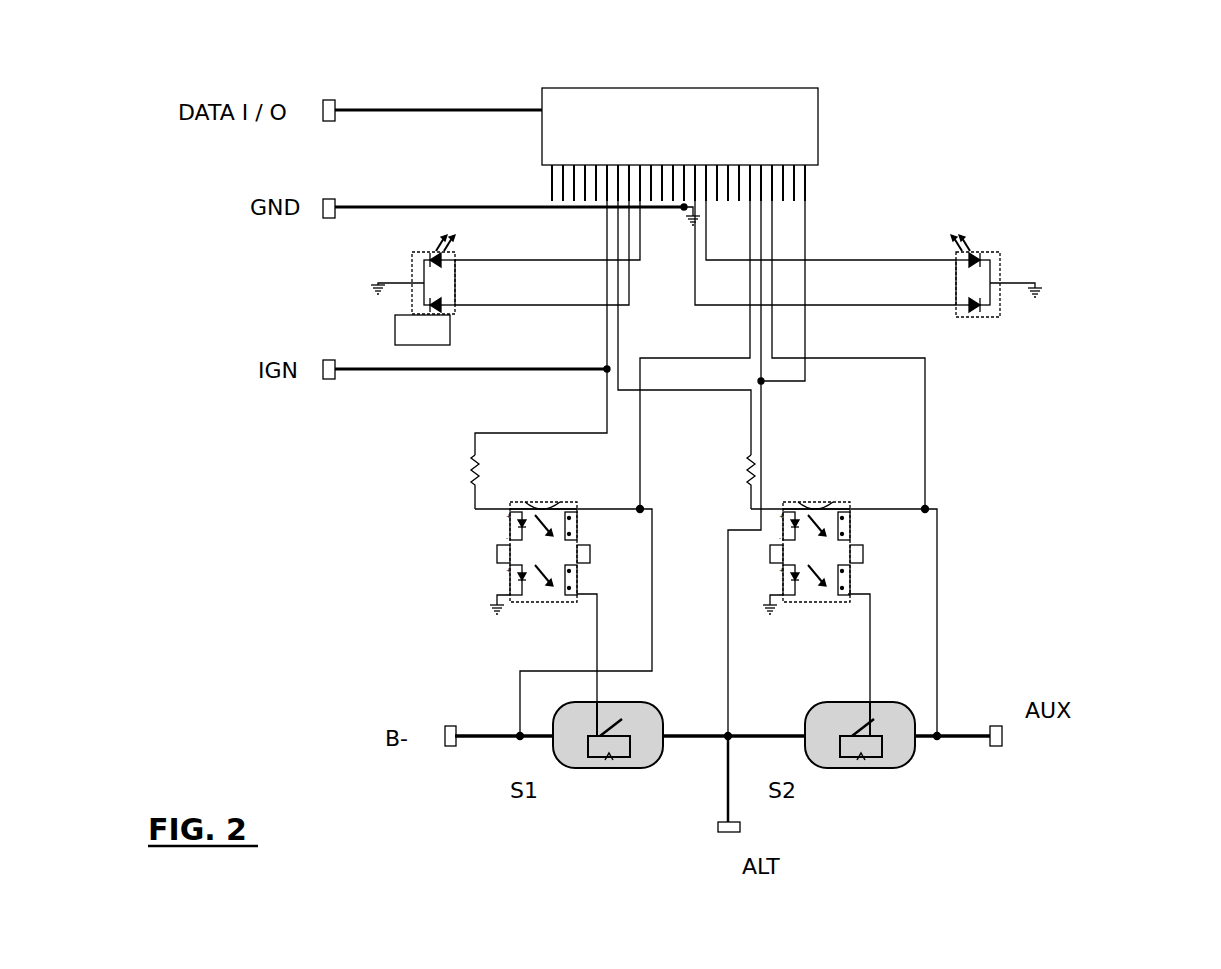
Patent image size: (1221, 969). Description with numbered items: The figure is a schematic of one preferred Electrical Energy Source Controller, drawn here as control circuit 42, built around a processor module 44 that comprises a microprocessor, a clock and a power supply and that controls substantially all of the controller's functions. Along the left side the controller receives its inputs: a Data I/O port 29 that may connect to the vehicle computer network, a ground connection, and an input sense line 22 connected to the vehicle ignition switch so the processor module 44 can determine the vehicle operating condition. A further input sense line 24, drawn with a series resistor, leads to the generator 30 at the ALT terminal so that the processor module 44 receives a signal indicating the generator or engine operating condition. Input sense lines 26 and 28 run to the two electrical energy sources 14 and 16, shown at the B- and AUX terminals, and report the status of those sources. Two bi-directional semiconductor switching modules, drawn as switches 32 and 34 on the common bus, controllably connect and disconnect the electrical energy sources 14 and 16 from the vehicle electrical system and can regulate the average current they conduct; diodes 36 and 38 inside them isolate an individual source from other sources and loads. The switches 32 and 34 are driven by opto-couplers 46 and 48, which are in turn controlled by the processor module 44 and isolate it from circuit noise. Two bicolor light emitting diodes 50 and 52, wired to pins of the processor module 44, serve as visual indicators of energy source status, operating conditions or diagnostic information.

The electrical energy source 14 is at (455, 745).
The electrical energy source 16 is at (1002, 746).
The input sense line 22 is at (455, 372).
The input sense line 24 is at (762, 463).
The input sense line 26 is at (520, 703).
The input sense line 28 is at (937, 662).
The Data I/O port 29 is at (376, 120).
The generator 30 is at (722, 833).
The switch 32 is at (612, 759).
The switch 34 is at (844, 753).
The diode 36 is at (608, 760).
The diode 38 is at (868, 767).
The control circuit 42 is at (996, 525).
The processor module 44 is at (832, 128).
The opto-coupler 46 is at (505, 530).
The opto-coupler 48 is at (843, 585).
The light emitting diode 50 is at (410, 283).
The light emitting diode 52 is at (1000, 272).